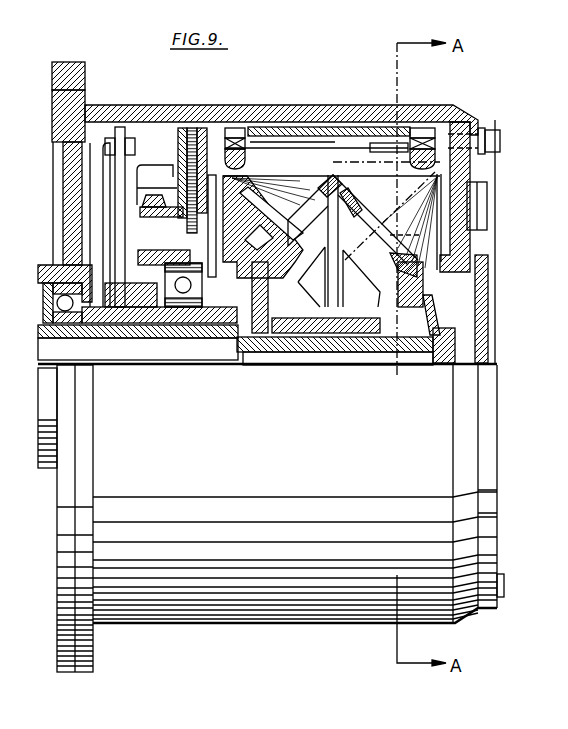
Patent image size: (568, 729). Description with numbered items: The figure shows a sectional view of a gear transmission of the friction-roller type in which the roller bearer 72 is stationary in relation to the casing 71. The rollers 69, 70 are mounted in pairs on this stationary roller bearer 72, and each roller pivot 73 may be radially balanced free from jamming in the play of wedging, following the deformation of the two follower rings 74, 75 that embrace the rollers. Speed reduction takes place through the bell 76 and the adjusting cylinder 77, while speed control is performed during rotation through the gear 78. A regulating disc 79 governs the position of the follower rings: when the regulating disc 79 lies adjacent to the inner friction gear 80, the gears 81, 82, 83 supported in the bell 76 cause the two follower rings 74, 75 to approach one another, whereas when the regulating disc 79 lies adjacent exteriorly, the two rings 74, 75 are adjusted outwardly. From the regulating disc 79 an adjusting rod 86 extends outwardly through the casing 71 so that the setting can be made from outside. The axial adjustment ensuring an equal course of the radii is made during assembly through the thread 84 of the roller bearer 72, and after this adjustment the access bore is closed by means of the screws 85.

The roller 69 is at (262, 176).
The roller 70 is at (372, 185).
The casing 71 is at (141, 112).
The roller bearer 72 is at (460, 218).
The roller pivot 73 is at (308, 274).
The follower ring 74 is at (222, 127).
The follower ring 75 is at (414, 150).
The bell 76 is at (311, 147).
The adjusting cylinder 77 is at (187, 127).
The gear 78 is at (165, 176).
The regulating disc 79 is at (100, 232).
The inner friction gear 80 is at (122, 250).
The gear 81 is at (213, 266).
The gear 82 is at (180, 203).
The gear 83 is at (177, 173).
The thread 84 is at (478, 187).
The screw 85 is at (500, 138).
The adjusting rod 86 is at (110, 130).